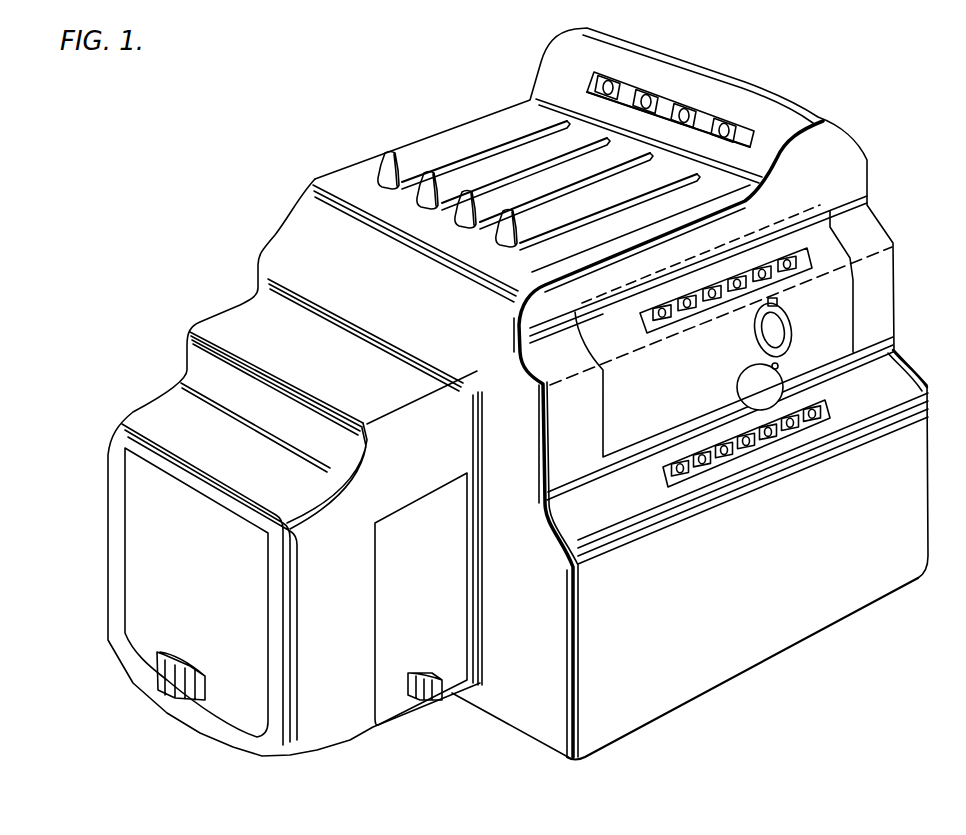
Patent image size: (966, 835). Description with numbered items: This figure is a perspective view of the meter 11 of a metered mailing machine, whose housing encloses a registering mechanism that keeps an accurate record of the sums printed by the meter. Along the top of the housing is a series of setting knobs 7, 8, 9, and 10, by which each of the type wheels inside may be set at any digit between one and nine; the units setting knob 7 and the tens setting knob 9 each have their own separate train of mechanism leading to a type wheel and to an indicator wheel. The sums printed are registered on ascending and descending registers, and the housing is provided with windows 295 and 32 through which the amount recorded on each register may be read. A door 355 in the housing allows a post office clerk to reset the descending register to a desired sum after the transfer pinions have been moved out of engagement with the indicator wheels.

The meter 11 is at (278, 230).
The setting knob 10 is at (377, 174).
The setting knob 8 is at (417, 197).
The tens setting knob 9 is at (454, 215).
The units setting knob 7 is at (497, 237).
The window 295 is at (690, 325).
The door 355 is at (830, 348).
The window 32 is at (739, 455).